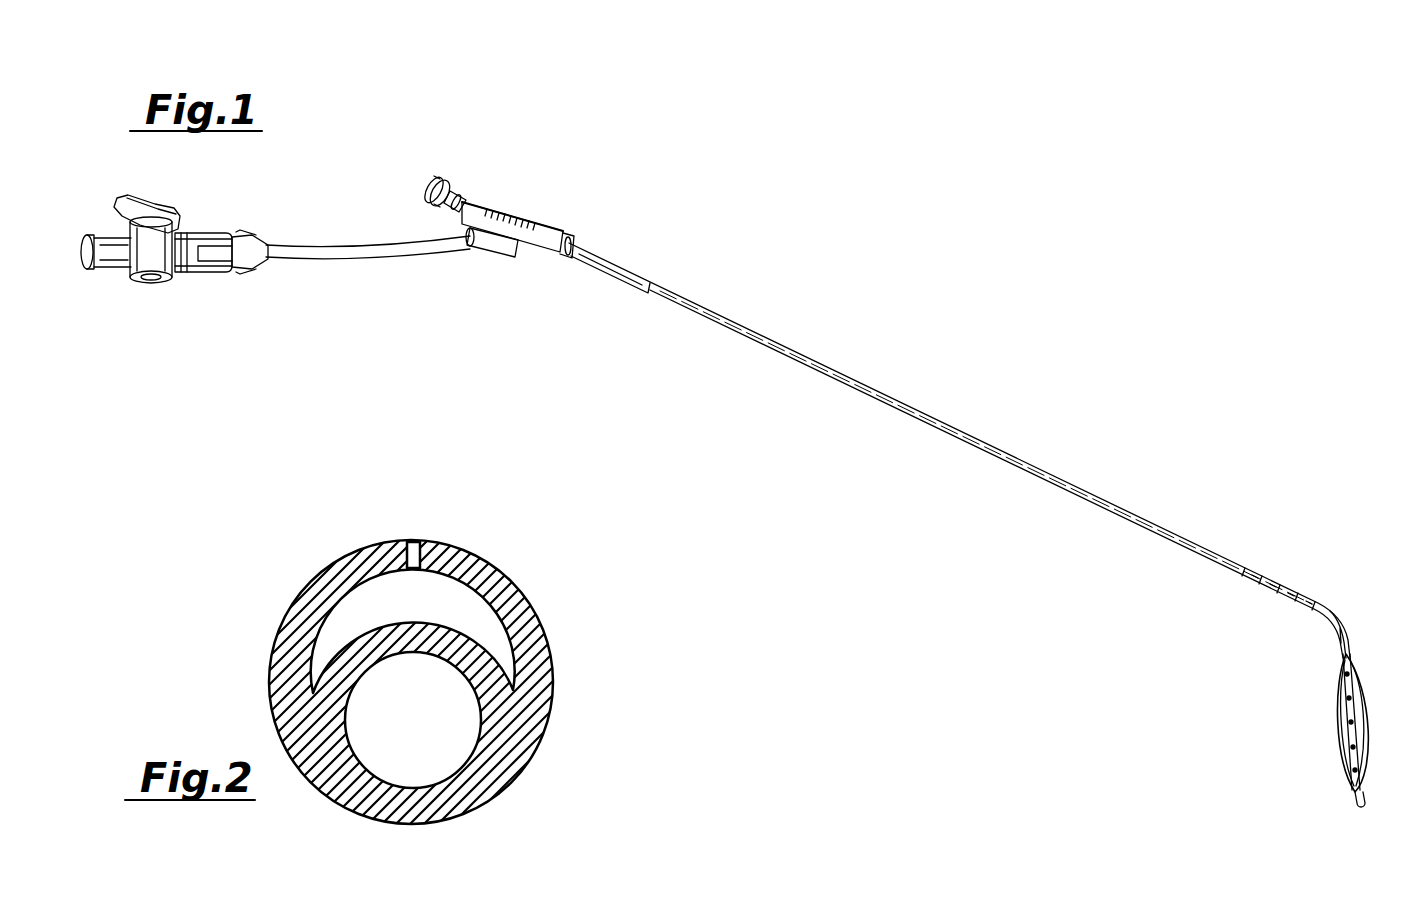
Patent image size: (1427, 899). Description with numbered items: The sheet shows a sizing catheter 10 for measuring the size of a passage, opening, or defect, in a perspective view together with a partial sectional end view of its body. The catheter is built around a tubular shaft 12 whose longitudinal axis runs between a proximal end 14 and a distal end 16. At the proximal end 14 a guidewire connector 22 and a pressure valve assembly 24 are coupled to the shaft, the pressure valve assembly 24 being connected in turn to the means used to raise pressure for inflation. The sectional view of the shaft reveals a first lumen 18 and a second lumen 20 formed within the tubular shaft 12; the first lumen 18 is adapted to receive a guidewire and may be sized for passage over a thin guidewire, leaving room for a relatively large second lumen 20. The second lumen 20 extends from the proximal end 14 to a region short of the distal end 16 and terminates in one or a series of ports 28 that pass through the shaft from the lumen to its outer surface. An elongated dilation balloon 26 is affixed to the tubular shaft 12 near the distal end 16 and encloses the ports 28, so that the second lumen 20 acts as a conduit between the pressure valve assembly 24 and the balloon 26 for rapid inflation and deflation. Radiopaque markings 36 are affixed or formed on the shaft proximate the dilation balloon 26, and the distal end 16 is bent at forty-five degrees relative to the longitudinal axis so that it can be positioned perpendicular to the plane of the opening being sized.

In FIG. 1, the sizing catheter 10 is at (955, 392).
In FIG. 1, the tubular shaft 12 is at (912, 423).
In FIG. 2, the tubular shaft 12 is at (527, 628).
In FIG. 1, the proximal end 14 is at (444, 166).
In FIG. 1, the distal end 16 is at (1368, 619).
In FIG. 2, the first lumen 18 is at (462, 770).
In FIG. 2, the second lumen 20 is at (350, 587).
In FIG. 1, the guidewire connector 22 is at (526, 204).
In FIG. 1, the pressure valve assembly 24 is at (190, 268).
In FIG. 1, the dilation balloon 26 is at (1335, 687).
In FIG. 2, the ports 28 is at (413, 542).
In FIG. 1, the radiopaque markings 36 is at (1247, 567).